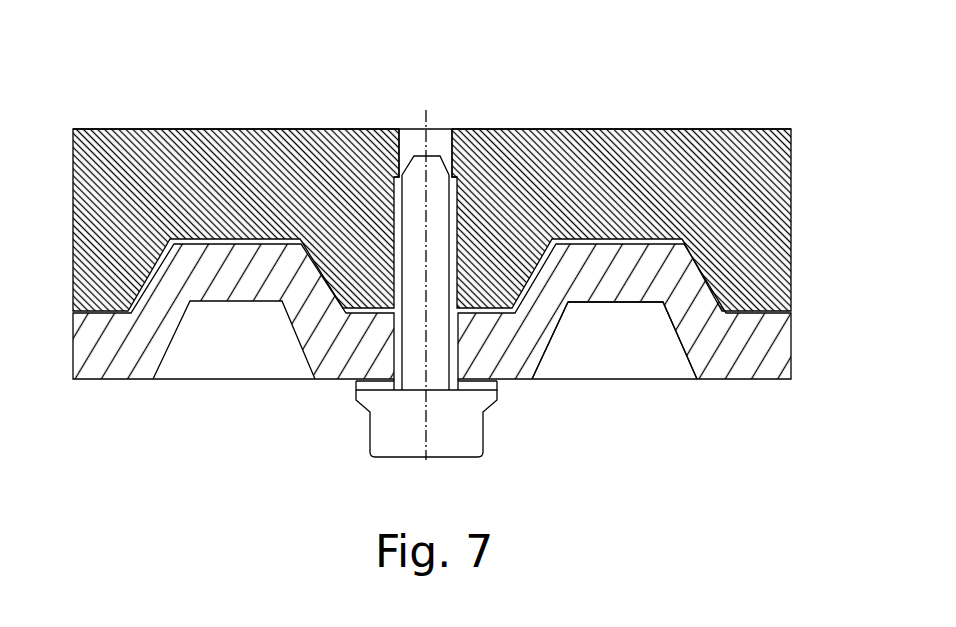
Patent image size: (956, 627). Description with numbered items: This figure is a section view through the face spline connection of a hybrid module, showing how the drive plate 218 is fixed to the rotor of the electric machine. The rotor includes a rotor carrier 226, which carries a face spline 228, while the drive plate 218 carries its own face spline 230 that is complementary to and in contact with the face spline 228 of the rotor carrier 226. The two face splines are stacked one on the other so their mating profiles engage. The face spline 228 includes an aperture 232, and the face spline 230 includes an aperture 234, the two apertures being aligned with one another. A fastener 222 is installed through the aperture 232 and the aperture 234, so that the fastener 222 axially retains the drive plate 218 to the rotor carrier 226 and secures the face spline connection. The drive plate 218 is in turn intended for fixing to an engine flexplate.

The drive plate 218 is at (792, 349).
The fastener 222 is at (465, 438).
The rotor carrier 226 is at (525, 129).
The face spline 228 is at (722, 129).
The face spline 230 is at (615, 302).
The aperture 232 is at (418, 131).
The aperture 234 is at (356, 382).